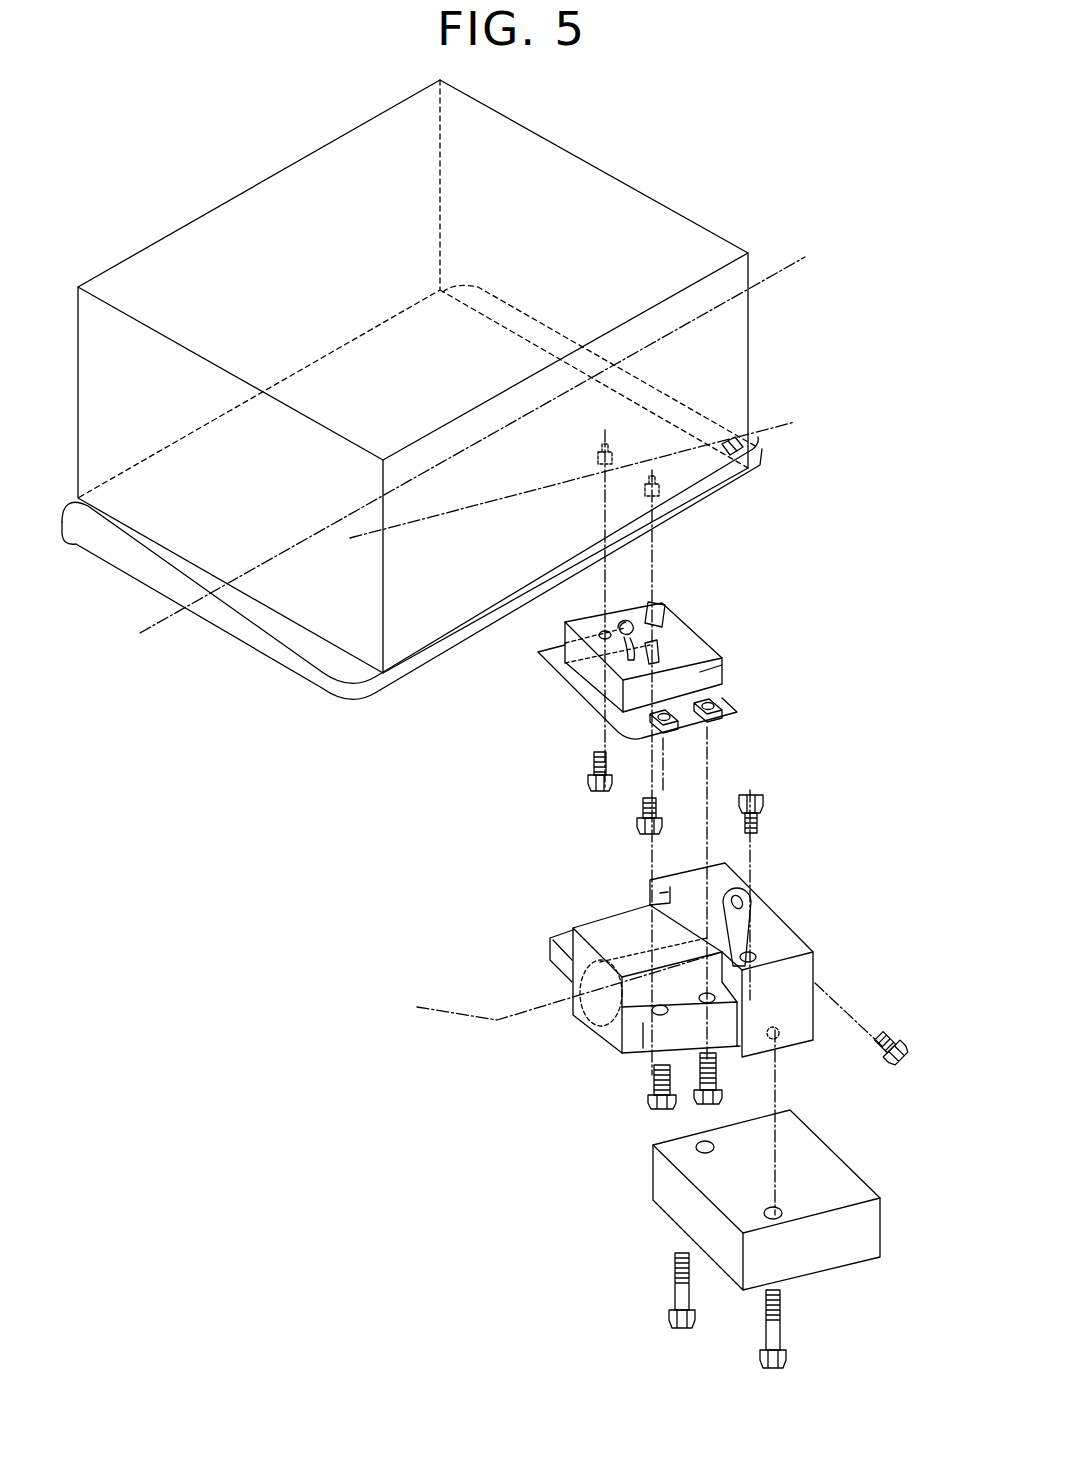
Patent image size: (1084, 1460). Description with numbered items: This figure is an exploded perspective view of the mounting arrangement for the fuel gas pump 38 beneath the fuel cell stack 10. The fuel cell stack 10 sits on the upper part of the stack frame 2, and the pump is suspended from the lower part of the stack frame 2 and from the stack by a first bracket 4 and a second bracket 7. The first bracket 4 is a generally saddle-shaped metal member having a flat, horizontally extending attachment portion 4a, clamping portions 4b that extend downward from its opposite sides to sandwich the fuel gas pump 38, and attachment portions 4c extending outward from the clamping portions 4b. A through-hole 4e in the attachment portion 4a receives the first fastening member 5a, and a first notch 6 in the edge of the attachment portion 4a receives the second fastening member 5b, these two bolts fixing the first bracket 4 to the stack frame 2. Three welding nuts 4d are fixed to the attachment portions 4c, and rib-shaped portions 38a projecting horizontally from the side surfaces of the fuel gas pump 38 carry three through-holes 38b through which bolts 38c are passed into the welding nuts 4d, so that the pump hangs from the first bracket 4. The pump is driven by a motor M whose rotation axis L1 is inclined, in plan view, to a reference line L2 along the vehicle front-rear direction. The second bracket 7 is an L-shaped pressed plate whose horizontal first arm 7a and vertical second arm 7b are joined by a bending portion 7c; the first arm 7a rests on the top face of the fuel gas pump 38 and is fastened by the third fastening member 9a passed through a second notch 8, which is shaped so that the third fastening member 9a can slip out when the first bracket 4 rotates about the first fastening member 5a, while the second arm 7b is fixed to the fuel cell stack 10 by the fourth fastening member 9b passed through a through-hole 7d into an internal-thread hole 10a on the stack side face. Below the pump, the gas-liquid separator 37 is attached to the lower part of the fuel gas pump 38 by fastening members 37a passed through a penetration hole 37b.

The fuel cell stack 10 is at (237, 210).
The stack frame 2 is at (120, 540).
The reference line L2 is at (160, 623).
The internal-thread hole 10a is at (752, 438).
The first bracket 4 is at (718, 731).
The attachment portion 4a is at (663, 655).
The clamping portions 4b is at (722, 680).
The attachment portions 4c is at (648, 718).
The welding nuts 4d is at (735, 712).
The through-hole 4e is at (612, 632).
The first notch 6 is at (663, 642).
The first fastening member 5a is at (588, 768).
The second fastening member 5b is at (634, 822).
The third fastening member 9a is at (758, 814).
The fourth fastening member 9b is at (898, 1050).
The second bracket 7 is at (920, 862).
The first arm 7a is at (760, 956).
The second arm 7b is at (750, 892).
The bending portion 7c is at (752, 908).
The through-hole 7d is at (668, 896).
The second notch 8 is at (765, 962).
The fuel gas pump 38 is at (793, 1045).
The rib-shaped portions 38a is at (547, 950).
The through-holes 38b is at (602, 1012).
The bolts 38c is at (645, 1108).
The rotation axis L1 is at (551, 987).
The motor M is at (575, 1020).
The gas-liquid separator 37 is at (683, 1213).
The fastening member 37a is at (672, 1288).
The penetration hole 37b is at (773, 1213).